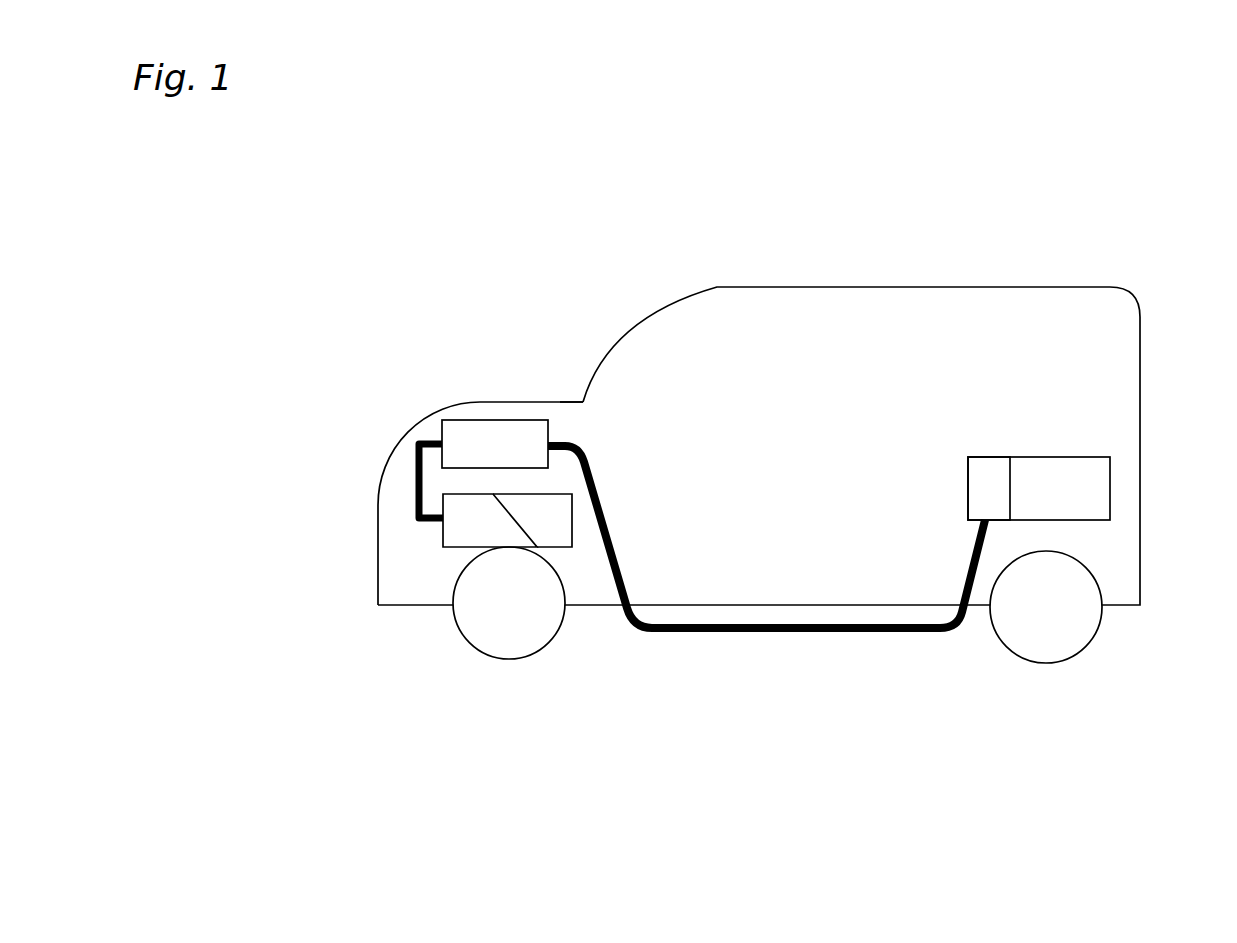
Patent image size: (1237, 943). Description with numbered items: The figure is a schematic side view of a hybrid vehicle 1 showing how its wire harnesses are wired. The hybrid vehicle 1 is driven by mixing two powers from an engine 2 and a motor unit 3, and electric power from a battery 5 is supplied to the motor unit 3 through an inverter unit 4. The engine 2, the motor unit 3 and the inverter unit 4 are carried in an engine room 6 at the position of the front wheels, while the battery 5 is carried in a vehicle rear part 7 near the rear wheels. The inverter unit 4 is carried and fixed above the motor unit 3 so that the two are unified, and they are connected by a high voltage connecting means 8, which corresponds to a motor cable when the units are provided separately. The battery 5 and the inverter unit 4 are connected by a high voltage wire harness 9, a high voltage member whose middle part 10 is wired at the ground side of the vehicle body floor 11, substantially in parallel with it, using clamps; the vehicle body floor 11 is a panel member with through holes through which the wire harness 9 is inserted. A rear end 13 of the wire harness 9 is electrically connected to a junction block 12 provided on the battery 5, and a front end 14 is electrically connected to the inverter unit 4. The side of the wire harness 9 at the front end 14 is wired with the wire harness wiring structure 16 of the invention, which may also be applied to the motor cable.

The hybrid vehicle 1 is at (512, 311).
The engine 2 is at (555, 530).
The motor unit 3 is at (458, 550).
The inverter unit 4 is at (470, 437).
The battery 5 is at (1063, 468).
The engine room 6 is at (398, 573).
The vehicle rear part 7 is at (1117, 545).
The high voltage connecting means 8 is at (414, 470).
The high voltage wire harness 9 is at (703, 631).
The middle part 10 is at (812, 632).
The vehicle body floor 11 is at (895, 610).
The junction block 12 is at (980, 465).
The rear end 13 is at (977, 540).
The front end 14 is at (577, 445).
The wire harness wiring structure 16 is at (560, 428).